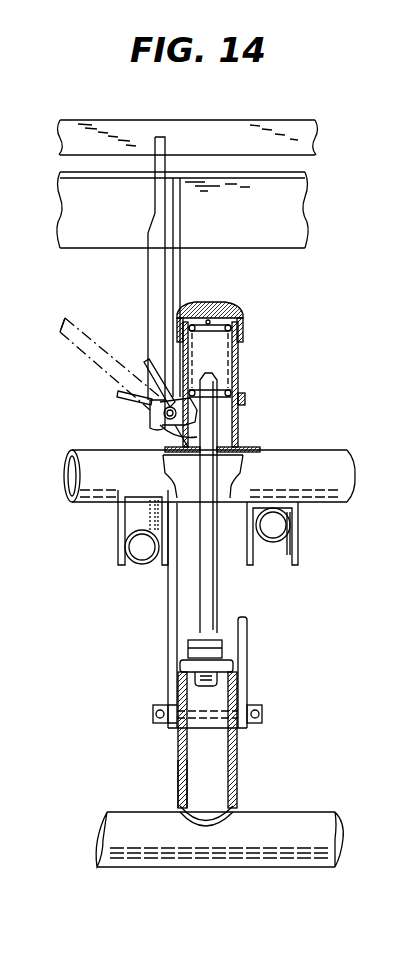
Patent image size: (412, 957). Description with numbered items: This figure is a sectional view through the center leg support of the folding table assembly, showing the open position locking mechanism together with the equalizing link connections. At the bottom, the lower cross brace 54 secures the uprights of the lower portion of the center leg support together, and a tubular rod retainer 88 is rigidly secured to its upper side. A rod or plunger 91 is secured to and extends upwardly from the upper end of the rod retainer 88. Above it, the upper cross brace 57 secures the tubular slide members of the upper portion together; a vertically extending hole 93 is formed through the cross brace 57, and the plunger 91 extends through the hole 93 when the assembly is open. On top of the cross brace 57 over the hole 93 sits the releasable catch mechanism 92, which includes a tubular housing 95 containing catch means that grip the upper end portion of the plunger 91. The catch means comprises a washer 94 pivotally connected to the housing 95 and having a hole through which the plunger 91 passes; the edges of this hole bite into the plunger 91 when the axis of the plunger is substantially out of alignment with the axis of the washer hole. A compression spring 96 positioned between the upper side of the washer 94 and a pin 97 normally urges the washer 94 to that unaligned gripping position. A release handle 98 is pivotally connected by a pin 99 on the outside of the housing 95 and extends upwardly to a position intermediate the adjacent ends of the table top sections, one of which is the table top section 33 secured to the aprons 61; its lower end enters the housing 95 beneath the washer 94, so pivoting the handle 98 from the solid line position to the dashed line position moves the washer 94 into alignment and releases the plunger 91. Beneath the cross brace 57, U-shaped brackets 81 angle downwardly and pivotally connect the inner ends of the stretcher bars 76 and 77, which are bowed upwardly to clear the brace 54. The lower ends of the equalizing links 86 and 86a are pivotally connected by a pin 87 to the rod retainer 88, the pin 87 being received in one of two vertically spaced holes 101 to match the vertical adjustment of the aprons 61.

The table top section 33 is at (313, 118).
The apron 61 is at (307, 206).
The release handle 98 is at (150, 270).
The pin 97 is at (212, 304).
The compression spring 96 is at (238, 314).
The releasable catch mechanism 92 is at (252, 352).
The washer 94 is at (243, 397).
The tubular housing 95 is at (240, 428).
The pin 99 is at (150, 414).
The hole 93 is at (228, 495).
The upper cross brace 57 is at (74, 503).
The U-shaped bracket 81 is at (120, 556).
The stretcher bar 77 is at (138, 568).
The stretcher bar 76 is at (298, 548).
The plunger 91 is at (215, 590).
The link 86 is at (173, 612).
The link 86a is at (247, 645).
The pin 87 is at (155, 712).
The holes 101 is at (180, 783).
The tubular rod retainer 88 is at (238, 747).
The lower cross brace 54 is at (112, 826).